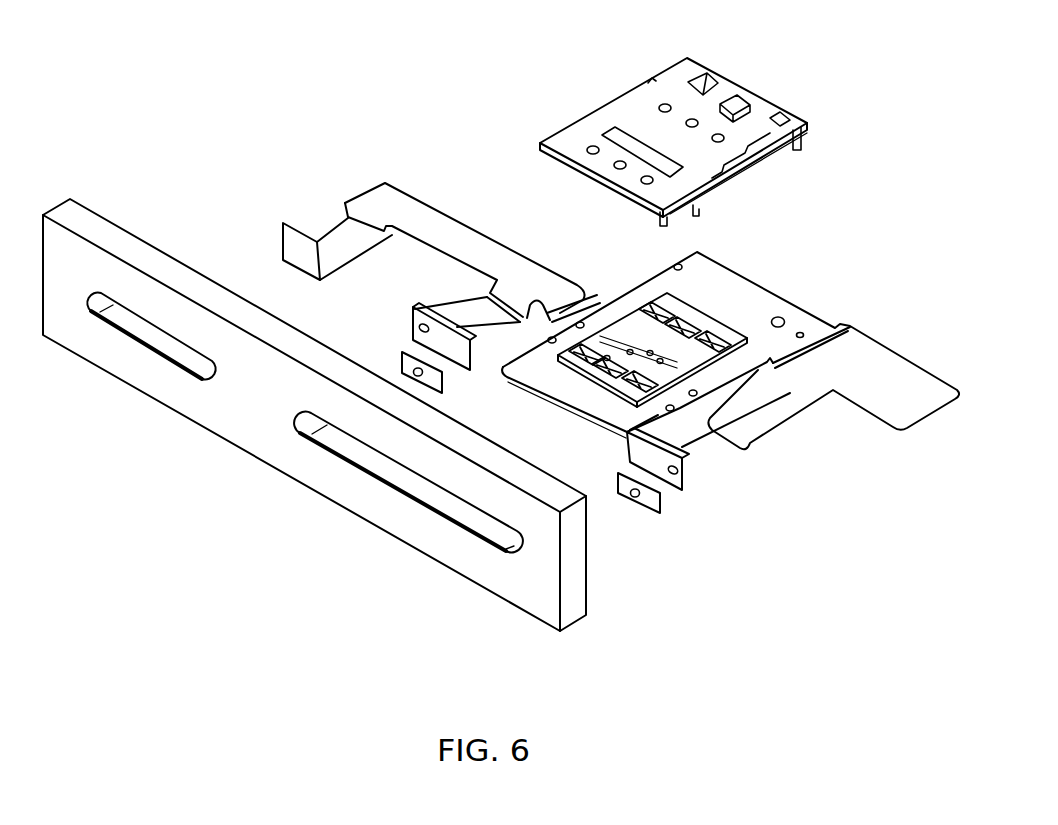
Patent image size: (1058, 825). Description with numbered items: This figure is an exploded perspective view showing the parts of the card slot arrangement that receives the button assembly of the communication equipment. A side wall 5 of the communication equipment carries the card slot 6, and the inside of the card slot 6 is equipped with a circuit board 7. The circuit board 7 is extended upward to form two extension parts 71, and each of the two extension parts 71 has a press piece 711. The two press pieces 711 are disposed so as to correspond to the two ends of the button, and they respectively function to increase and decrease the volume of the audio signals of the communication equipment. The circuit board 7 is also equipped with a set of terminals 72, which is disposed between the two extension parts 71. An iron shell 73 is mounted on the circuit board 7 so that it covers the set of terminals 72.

The side wall 5 is at (213, 415).
The card slot 6 is at (372, 462).
The circuit board 7 is at (621, 378).
The extension parts 71 is at (417, 314).
The press piece 711 is at (398, 352).
The set of terminals 72 is at (703, 310).
The iron shell 73 is at (643, 113).